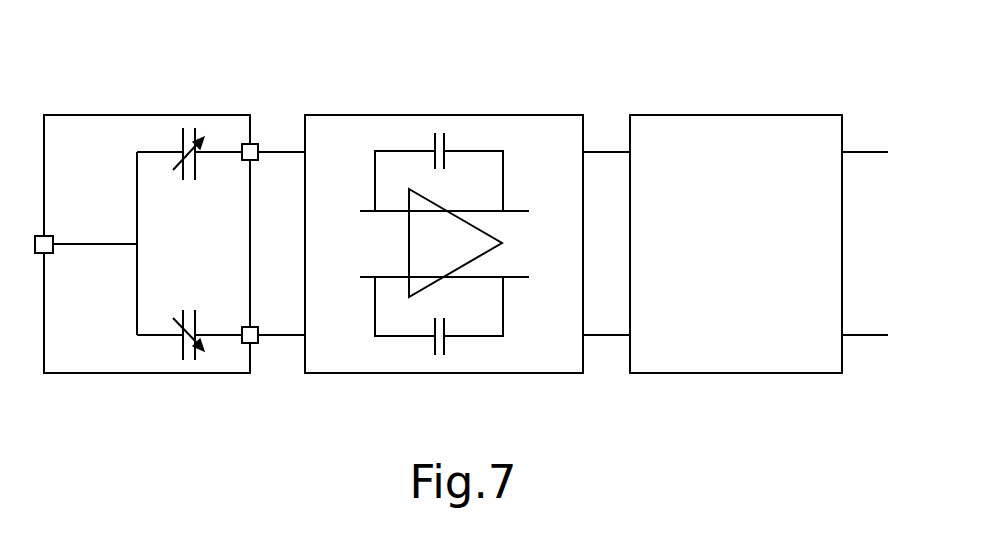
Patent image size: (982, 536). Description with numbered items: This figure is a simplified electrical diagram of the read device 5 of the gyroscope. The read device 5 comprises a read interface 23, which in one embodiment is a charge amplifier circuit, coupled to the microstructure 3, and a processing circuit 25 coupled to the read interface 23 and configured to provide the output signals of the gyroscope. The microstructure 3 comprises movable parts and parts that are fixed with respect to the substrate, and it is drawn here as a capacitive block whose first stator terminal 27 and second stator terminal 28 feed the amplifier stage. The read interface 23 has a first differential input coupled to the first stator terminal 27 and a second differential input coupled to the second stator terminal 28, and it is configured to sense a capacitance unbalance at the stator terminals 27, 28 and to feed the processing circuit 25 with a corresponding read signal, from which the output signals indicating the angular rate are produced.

The read device 5 is at (627, 88).
The microstructure 3 is at (105, 130).
The first stator terminal 27 is at (256, 147).
The second stator terminal 28 is at (256, 343).
The read interface 23 is at (428, 114).
The processing circuit 25 is at (792, 128).